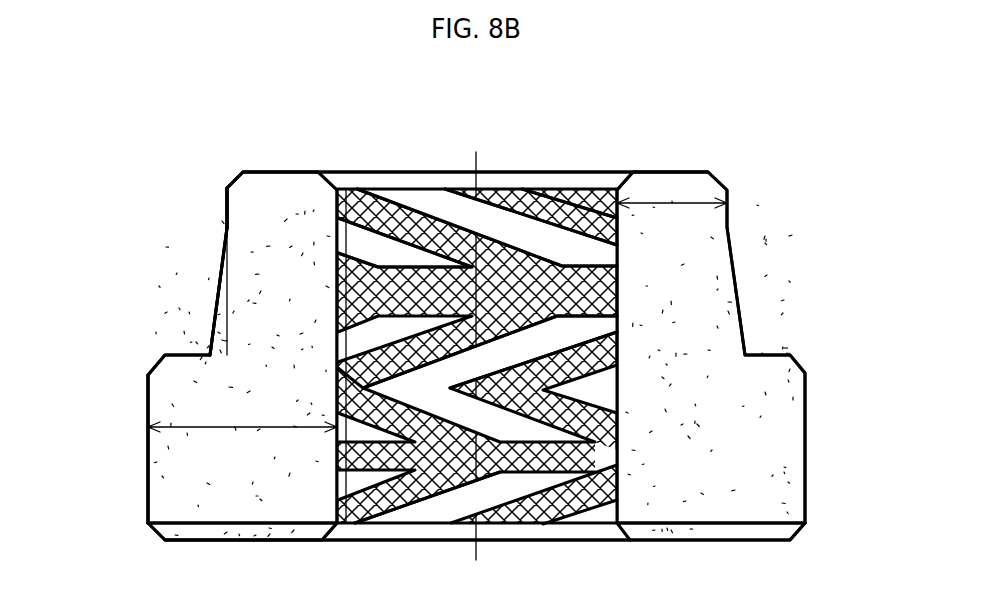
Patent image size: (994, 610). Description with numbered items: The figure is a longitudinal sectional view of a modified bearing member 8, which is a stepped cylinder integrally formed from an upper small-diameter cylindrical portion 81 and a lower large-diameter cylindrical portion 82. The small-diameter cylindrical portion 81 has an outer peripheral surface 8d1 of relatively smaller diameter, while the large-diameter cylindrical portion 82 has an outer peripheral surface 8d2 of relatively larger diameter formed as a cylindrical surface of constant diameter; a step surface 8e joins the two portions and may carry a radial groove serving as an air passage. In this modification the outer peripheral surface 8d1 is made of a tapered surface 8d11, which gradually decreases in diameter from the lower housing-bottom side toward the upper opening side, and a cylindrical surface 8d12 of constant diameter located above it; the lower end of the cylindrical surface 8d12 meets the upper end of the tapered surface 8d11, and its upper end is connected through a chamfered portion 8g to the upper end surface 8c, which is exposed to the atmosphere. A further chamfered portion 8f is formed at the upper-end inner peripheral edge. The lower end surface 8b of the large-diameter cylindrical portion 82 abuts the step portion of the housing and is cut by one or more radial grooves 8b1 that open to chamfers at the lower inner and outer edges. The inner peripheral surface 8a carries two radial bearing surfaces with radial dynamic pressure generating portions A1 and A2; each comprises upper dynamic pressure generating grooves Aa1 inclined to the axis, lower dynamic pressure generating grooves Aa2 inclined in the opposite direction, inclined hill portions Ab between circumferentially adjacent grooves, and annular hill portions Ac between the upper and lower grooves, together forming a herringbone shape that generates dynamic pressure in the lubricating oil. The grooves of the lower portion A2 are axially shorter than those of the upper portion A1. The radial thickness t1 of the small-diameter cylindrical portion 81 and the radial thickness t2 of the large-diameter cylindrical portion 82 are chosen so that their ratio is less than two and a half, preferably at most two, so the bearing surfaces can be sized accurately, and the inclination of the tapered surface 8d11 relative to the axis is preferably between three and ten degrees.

The bearing member 8 is at (780, 147).
The inner peripheral surface 8a is at (620, 240).
The lower end surface 8b is at (694, 542).
The radial groove 8b1 is at (218, 525).
The upper end surface 8c is at (662, 171).
The outer peripheral surface of small-diameter cylindrical portion 8d1 is at (118, 214).
The tapered surface 8d11 is at (227, 257).
The cylindrical surface 8d12 is at (227, 210).
The outer peripheral surface of large-diameter cylindrical portion 8d2 is at (147, 441).
The step surface 8e is at (206, 357).
The chamfered portion 8f is at (342, 196).
The chamfered portion 8g is at (237, 173).
The small-diameter cylindrical portion 81 is at (265, 237).
The large-diameter cylindrical portion 82 is at (273, 460).
The radial dynamic pressure generating portion A1 is at (374, 250).
The radial dynamic pressure generating portion A2 is at (360, 520).
The upper dynamic pressure generating grooves Aa1 is at (504, 232).
The lower dynamic pressure generating grooves Aa2 is at (590, 325).
The inclined hill portions Ab is at (571, 210).
The annular hill portions Ac is at (431, 268).
The radial thickness of small-diameter cylindrical portion t1 is at (680, 203).
The radial thickness of large-diameter cylindrical portion t2 is at (242, 413).